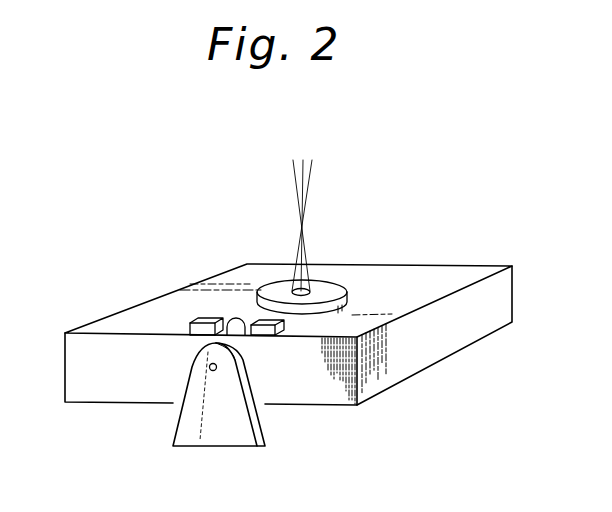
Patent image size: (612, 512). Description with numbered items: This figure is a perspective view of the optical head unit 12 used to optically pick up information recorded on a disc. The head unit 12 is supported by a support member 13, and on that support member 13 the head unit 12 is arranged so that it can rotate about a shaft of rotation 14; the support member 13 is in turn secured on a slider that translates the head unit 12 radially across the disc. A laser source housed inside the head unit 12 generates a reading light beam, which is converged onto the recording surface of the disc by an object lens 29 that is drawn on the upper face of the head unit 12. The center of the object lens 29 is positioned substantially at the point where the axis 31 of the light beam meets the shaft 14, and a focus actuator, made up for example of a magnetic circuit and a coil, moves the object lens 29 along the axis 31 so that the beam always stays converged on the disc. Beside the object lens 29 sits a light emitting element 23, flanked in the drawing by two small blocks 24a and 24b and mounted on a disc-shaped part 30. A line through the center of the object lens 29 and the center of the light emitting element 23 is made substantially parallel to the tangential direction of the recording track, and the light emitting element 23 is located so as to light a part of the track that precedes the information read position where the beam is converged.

The optical head unit 12 is at (491, 246).
The support member 13 is at (243, 447).
The shaft of rotation 14 is at (209, 367).
The light emitting element 23 is at (233, 316).
The block element 24a is at (197, 321).
The block element 24b is at (283, 330).
The object lens 29 is at (304, 289).
The disk 30 is at (343, 291).
The axis of the light beam 31 is at (311, 177).